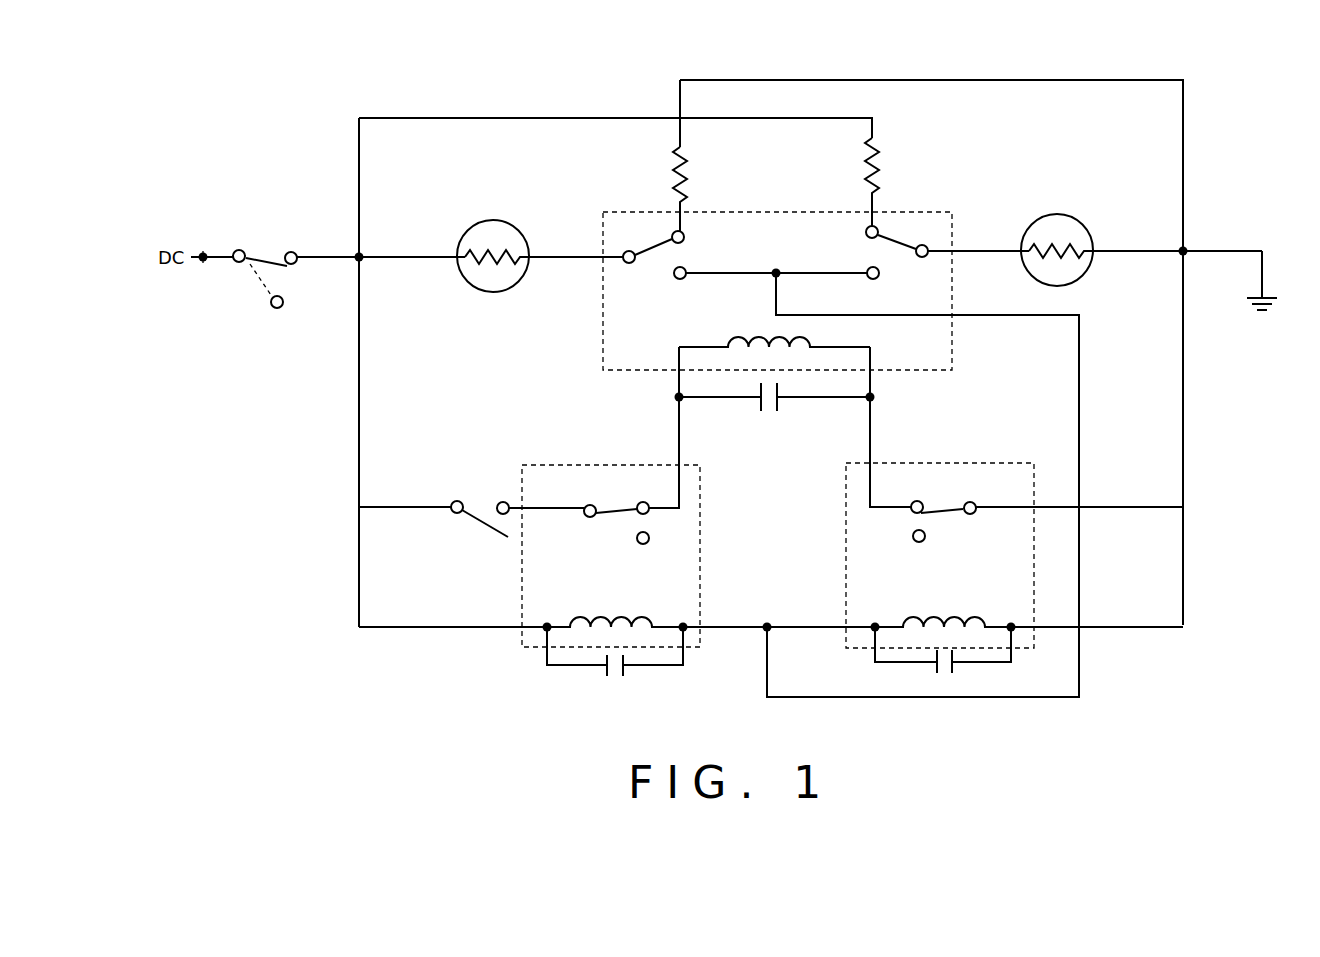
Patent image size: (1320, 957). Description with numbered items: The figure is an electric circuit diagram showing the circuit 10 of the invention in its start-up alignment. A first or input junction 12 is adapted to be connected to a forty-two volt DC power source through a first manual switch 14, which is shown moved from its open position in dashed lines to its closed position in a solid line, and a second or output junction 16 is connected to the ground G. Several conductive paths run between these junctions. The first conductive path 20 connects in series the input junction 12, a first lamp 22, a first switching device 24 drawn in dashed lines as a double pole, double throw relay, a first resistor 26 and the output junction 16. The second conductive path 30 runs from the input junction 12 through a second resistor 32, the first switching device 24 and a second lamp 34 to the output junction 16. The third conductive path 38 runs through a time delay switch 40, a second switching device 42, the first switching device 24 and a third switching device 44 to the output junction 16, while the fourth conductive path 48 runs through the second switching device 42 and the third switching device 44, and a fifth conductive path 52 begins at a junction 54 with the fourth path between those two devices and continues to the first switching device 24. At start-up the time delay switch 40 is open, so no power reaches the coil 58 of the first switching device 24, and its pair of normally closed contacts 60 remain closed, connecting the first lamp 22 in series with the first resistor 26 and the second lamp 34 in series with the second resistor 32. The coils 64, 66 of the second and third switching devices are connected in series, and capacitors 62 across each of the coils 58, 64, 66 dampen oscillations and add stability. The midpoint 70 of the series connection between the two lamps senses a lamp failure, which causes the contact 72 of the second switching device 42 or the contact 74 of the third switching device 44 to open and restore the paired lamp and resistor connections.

The circuit 10 is at (1092, 48).
The first junction 12 is at (357, 254).
The first manual switch 14 is at (262, 252).
The second junction 16 is at (1190, 247).
The first conductive path 20 is at (812, 80).
The first lamp 22 is at (500, 220).
The first switching device 24 is at (732, 212).
The first resistor 26 is at (675, 173).
The second conductive path 30 is at (497, 118).
The second resistor 32 is at (875, 180).
The second lamp 34 is at (1047, 212).
The third conductive path 38 is at (679, 443).
The time delay switch 40 is at (484, 530).
The second switching device 42 is at (565, 465).
The third switching device 44 is at (916, 463).
The fourth conductive path 48 is at (475, 630).
The fifth conductive path 52 is at (939, 698).
The junction 54 is at (767, 620).
The coil 58 is at (758, 336).
The normally closed contacts 60 is at (684, 240).
The capacitors 62 is at (777, 402).
The coil 64 is at (600, 617).
The coil 66 is at (943, 613).
The midpoint 70 is at (778, 280).
The contact 72 is at (647, 503).
The contact 74 is at (917, 502).